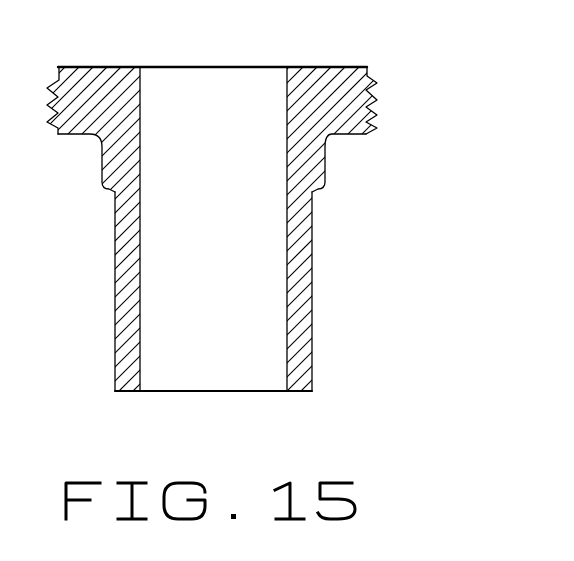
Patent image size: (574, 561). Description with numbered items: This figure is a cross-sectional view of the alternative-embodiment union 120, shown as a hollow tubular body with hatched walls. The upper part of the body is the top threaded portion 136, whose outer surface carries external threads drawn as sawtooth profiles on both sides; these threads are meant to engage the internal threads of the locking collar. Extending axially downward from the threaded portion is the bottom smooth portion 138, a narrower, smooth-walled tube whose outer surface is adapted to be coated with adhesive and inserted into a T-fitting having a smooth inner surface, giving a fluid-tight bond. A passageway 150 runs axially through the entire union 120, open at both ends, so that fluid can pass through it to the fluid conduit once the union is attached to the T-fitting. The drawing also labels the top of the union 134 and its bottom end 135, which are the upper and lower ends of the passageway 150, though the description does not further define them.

The union 120 is at (287, 223).
The top face of insert 134 is at (233, 73).
The bottom end of insert 135 is at (186, 380).
The top threaded portion 136 is at (378, 112).
The bottom smooth portion 138 is at (313, 274).
The passageway 150 is at (230, 238).